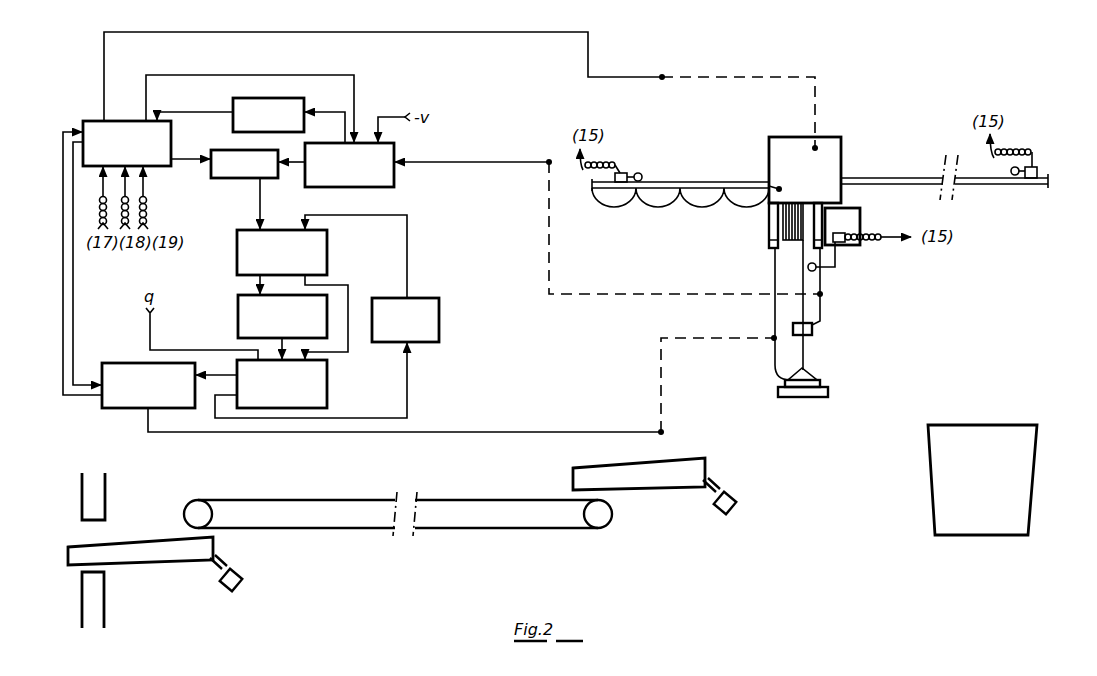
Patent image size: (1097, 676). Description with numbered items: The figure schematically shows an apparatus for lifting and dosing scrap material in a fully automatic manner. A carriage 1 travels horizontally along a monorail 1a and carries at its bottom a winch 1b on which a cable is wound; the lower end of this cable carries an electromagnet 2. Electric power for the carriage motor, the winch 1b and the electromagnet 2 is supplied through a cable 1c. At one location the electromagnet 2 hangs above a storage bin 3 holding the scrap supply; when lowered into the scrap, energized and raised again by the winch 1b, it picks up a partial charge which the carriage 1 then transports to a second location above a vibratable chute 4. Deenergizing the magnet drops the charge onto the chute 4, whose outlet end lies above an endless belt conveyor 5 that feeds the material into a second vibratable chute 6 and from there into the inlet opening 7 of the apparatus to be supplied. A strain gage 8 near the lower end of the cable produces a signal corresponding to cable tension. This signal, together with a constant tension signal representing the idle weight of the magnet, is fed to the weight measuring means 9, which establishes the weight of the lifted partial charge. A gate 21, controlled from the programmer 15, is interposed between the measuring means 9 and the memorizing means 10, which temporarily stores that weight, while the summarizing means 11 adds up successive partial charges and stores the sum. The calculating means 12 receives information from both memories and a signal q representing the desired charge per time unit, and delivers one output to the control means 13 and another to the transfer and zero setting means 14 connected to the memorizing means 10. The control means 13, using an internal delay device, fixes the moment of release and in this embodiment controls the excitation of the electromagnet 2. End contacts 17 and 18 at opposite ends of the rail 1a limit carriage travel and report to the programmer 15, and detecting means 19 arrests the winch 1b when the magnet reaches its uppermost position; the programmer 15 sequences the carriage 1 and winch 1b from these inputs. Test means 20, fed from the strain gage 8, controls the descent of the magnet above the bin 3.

The carriage 1 is at (825, 168).
The monorail 1a is at (704, 182).
The winch 1b is at (861, 218).
The cable 1c is at (670, 204).
The electromagnet 2 is at (820, 386).
The storage bin 3 is at (996, 438).
The vibratable chute 4 is at (667, 480).
The endless belt conveyor 5 is at (514, 518).
The second vibratable chute 6 is at (183, 555).
The inlet opening 7 is at (92, 537).
The strain gage 8 is at (810, 340).
The weight measuring means 9 is at (392, 145).
The memorizing means 10 is at (247, 242).
The summarizing means 11 is at (240, 311).
The calculating means 12 is at (328, 387).
The control means 13 is at (121, 409).
The transfer and zero setting means 14 is at (440, 322).
The programmer 15 is at (172, 145).
The end contact 17 is at (626, 173).
The end contact 18 is at (1036, 172).
The detecting means 19 is at (836, 283).
The test means 20 is at (294, 106).
The gate 21 is at (212, 184).